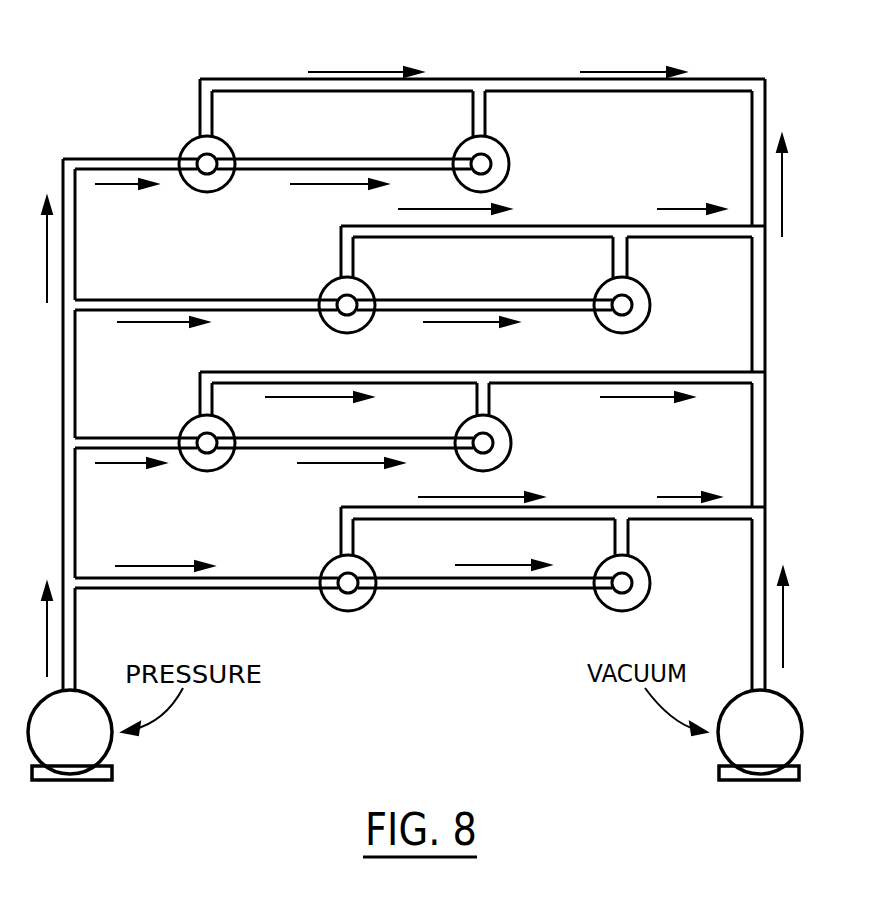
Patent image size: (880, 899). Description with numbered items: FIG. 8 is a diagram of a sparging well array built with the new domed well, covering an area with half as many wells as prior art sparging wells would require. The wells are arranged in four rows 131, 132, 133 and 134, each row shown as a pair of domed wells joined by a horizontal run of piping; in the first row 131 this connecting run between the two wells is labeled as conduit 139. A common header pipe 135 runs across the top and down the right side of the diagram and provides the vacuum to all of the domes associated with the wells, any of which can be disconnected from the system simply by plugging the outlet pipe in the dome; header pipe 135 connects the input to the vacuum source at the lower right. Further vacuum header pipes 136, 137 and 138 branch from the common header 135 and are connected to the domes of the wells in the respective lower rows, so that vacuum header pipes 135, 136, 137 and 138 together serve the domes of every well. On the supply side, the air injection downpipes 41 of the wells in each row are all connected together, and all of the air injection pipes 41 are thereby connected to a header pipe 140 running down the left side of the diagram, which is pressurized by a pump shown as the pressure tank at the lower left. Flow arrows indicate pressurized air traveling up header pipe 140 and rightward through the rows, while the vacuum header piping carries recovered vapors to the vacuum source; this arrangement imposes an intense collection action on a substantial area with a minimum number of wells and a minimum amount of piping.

The air injection downpipe 41 is at (213, 170).
The first row of sparging wells 131 is at (286, 161).
The second row of sparging wells 132 is at (490, 284).
The third row of sparging wells 133 is at (327, 431).
The fourth row of sparging wells 134 is at (490, 554).
The common header pipe 135 is at (516, 79).
The vacuum header pipe 136 is at (568, 226).
The vacuum header pipe 137 is at (604, 372).
The vacuum header pipe 138 is at (583, 507).
The connecting conduit 139 is at (443, 110).
The header pipe 140 is at (77, 263).